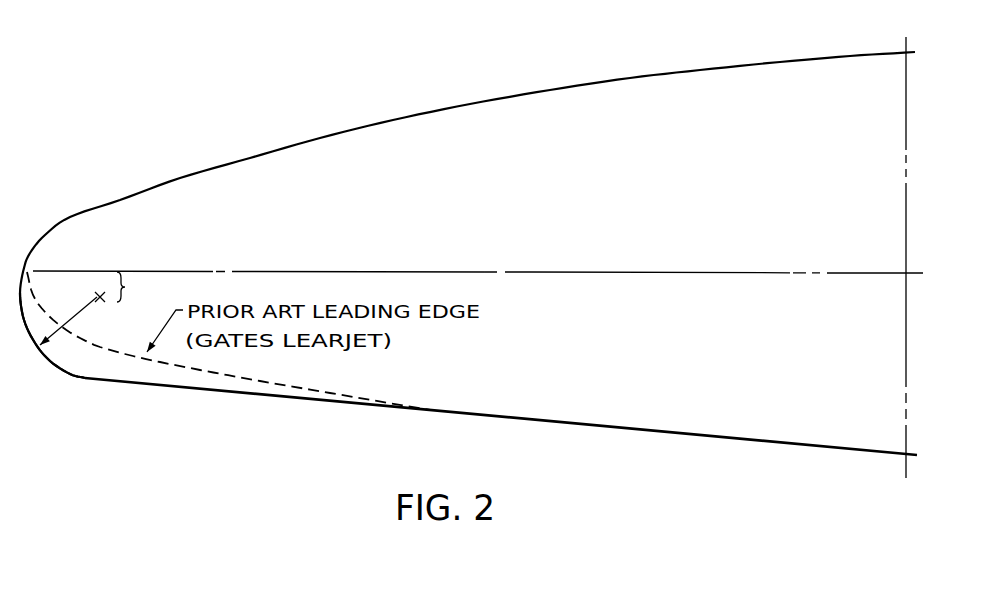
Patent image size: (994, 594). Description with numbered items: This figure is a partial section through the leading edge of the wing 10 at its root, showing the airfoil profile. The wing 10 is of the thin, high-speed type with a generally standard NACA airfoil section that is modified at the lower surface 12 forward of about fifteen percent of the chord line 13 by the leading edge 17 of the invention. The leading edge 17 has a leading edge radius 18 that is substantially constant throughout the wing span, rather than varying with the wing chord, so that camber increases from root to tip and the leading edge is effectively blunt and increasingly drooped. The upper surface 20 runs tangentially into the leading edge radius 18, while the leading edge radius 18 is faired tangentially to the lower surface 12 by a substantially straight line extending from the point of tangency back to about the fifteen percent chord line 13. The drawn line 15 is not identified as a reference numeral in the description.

The wing 10 is at (468, 244).
The lower surface 12 is at (725, 437).
The chord line 13 is at (906, 200).
The chord line 15 is at (583, 272).
The leading edge 17 is at (80, 398).
The leading edge radius 18 is at (80, 312).
The upper surface 20 is at (393, 120).